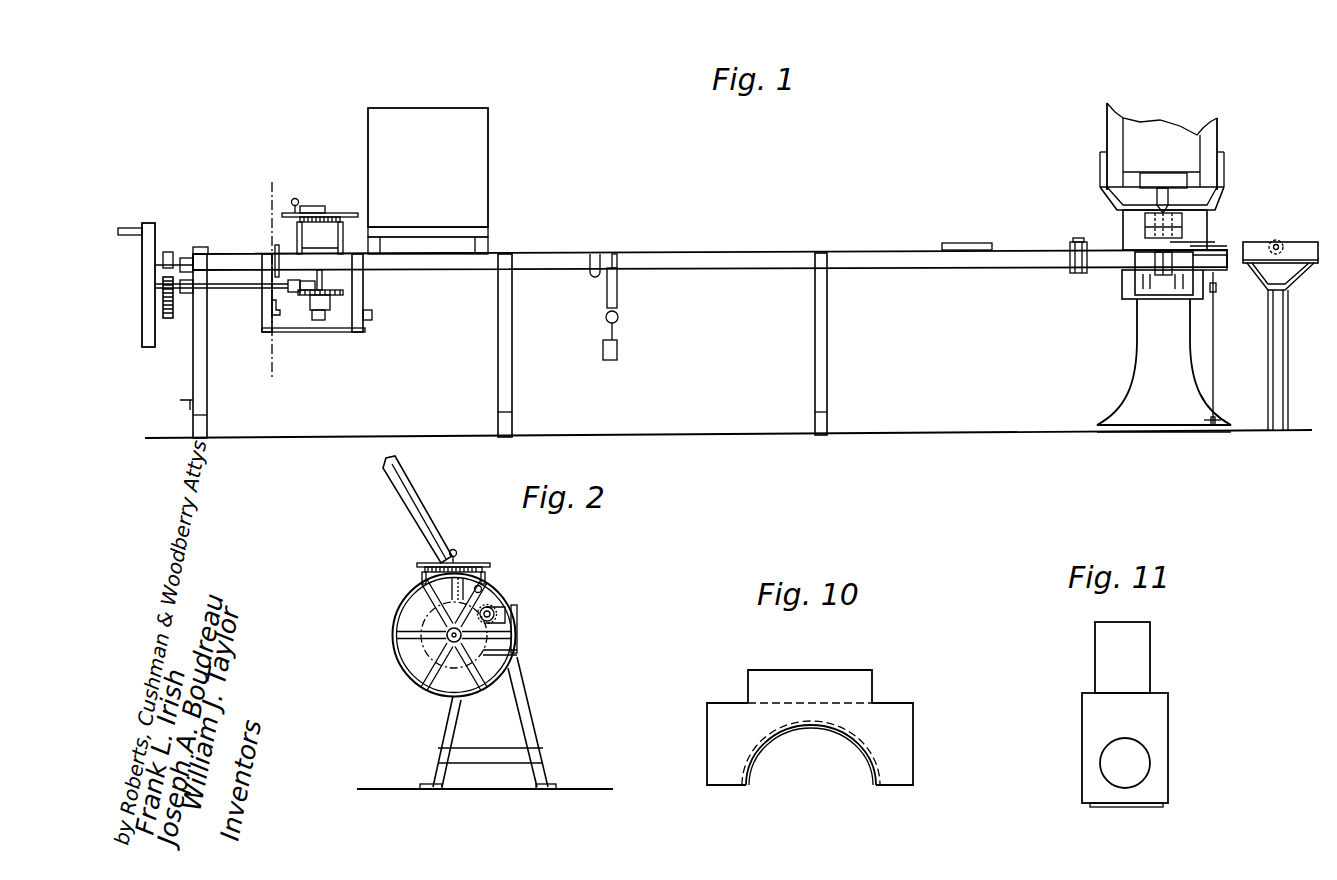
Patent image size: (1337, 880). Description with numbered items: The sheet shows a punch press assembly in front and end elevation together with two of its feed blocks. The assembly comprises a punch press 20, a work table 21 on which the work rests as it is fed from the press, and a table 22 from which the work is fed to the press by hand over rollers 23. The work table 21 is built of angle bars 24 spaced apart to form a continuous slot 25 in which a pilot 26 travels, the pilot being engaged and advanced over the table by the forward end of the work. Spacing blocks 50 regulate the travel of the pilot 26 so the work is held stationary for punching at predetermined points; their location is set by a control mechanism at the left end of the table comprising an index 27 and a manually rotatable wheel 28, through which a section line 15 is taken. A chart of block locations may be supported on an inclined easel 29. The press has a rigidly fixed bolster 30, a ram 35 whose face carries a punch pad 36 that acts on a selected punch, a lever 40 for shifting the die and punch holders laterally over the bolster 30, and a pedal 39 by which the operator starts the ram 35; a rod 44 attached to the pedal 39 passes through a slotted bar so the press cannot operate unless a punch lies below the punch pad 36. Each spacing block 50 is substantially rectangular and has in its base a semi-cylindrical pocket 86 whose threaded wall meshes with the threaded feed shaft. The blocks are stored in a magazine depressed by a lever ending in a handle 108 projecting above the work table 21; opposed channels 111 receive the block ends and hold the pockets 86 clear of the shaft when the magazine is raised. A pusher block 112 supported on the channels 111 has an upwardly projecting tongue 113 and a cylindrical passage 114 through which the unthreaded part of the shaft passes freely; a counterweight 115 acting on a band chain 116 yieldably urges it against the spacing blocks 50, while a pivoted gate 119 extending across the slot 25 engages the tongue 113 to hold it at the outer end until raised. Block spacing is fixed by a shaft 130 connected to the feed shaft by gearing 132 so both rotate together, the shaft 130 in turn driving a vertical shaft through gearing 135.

In FIG. 1, the section line 15- 15 is at (290, 185).
In FIG. 1, the punch press 20 is at (1118, 220).
In FIG. 1, the work table 21 is at (884, 268).
In FIG. 1, the table 22 is at (1312, 263).
In FIG. 1, the rollers 23 is at (1278, 240).
In FIG. 2, the angle bars 24 is at (486, 606).
In FIG. 2, the slot 25 is at (496, 612).
In FIG. 1, the pilot 26 is at (965, 243).
In FIG. 1, the index 27 is at (320, 208).
In FIG. 2, the index 27 is at (468, 556).
In FIG. 1, the manually rotatable wheel 28 is at (155, 232).
In FIG. 2, the manually rotatable wheel 28 is at (395, 610).
In FIG. 1, the inclined easel 29 is at (488, 144).
In FIG. 2, the inclined easel 29 is at (403, 482).
In FIG. 1, the bolster 30 is at (1140, 270).
In FIG. 1, the ram 35 is at (1162, 156).
In FIG. 1, the punch pad 36 is at (1175, 182).
In FIG. 1, the pedal 39 is at (1212, 428).
In FIG. 1, the lever 40 is at (1205, 241).
In FIG. 1, the rod 44 is at (1215, 342).
In FIG. 10, the spacing blocks 50 is at (890, 736).
In FIG. 10, the semi-cylindrical pocket 86 is at (855, 680).
In FIG. 1, the handle 108 is at (279, 262).
In FIG. 1, the channels 111 is at (619, 265).
In FIG. 11, the pusher block 112 is at (1147, 710).
In FIG. 11, the tongue 113 is at (1137, 642).
In FIG. 11, the cylindrical passage 114 is at (1110, 765).
In FIG. 1, the counterweight 115 is at (617, 350).
In FIG. 1, the band chain 116 is at (605, 306).
In FIG. 1, the gate 119 is at (200, 250).
In FIG. 1, the shaft 130 is at (222, 283).
In FIG. 2, the gearing 132 is at (420, 655).
In FIG. 1, the gearing 135 is at (340, 294).